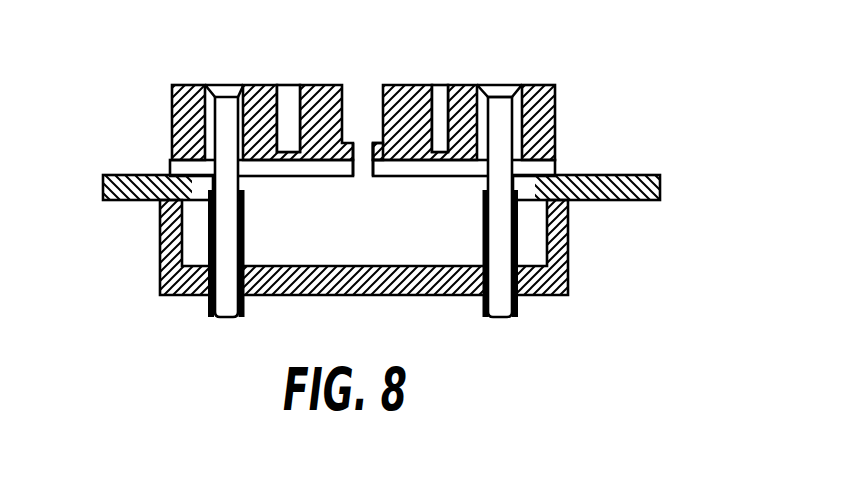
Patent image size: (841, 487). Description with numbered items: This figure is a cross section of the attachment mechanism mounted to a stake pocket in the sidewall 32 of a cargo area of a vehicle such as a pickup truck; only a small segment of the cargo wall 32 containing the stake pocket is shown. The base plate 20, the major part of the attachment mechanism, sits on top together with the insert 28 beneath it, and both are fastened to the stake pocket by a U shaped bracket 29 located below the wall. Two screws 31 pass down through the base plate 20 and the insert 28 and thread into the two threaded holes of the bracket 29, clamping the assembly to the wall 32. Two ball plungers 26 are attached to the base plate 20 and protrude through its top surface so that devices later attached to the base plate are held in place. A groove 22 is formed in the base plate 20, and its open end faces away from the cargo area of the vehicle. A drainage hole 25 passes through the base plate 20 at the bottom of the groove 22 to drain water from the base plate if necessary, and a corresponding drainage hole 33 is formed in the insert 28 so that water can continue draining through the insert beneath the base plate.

The base plate 20 is at (172, 105).
The groove 22 is at (358, 106).
The drainage hole 25 is at (373, 141).
The ball plungers 26 is at (289, 88).
The insert 28 is at (166, 167).
The U shaped bracket 29 is at (430, 297).
The screws 31 is at (227, 297).
The sidewall 32 is at (113, 201).
The drainage hole 33 is at (360, 165).